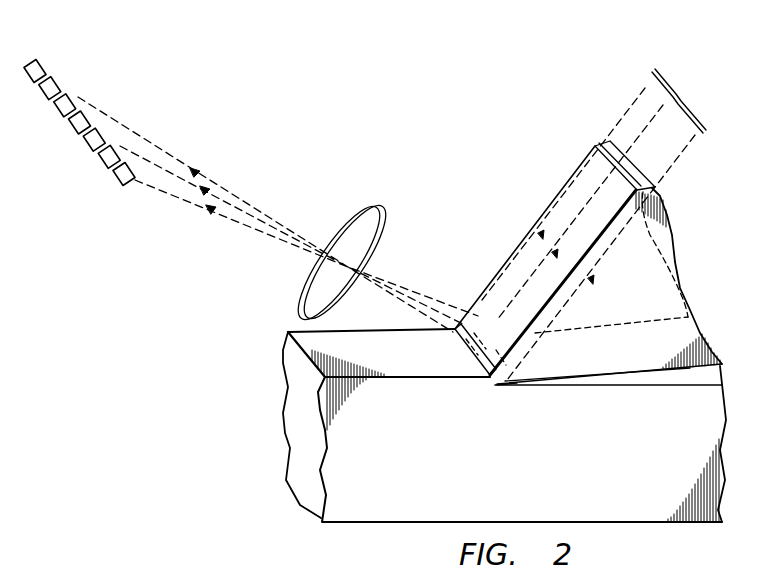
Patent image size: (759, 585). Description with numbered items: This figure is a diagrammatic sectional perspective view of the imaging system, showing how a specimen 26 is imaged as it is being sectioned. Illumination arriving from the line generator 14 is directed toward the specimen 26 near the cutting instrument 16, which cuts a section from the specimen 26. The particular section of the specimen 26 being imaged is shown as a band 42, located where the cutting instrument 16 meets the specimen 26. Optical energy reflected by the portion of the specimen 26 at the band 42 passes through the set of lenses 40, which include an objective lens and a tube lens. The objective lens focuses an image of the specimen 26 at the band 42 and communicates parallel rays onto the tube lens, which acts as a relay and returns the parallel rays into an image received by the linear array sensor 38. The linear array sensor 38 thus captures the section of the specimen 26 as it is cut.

The line generator 14 is at (598, 219).
The cutting instrument 16 is at (655, 272).
The specimen 26 is at (378, 524).
The linear array sensor 38 is at (38, 60).
The lenses 40 is at (371, 208).
The band 42 is at (510, 381).